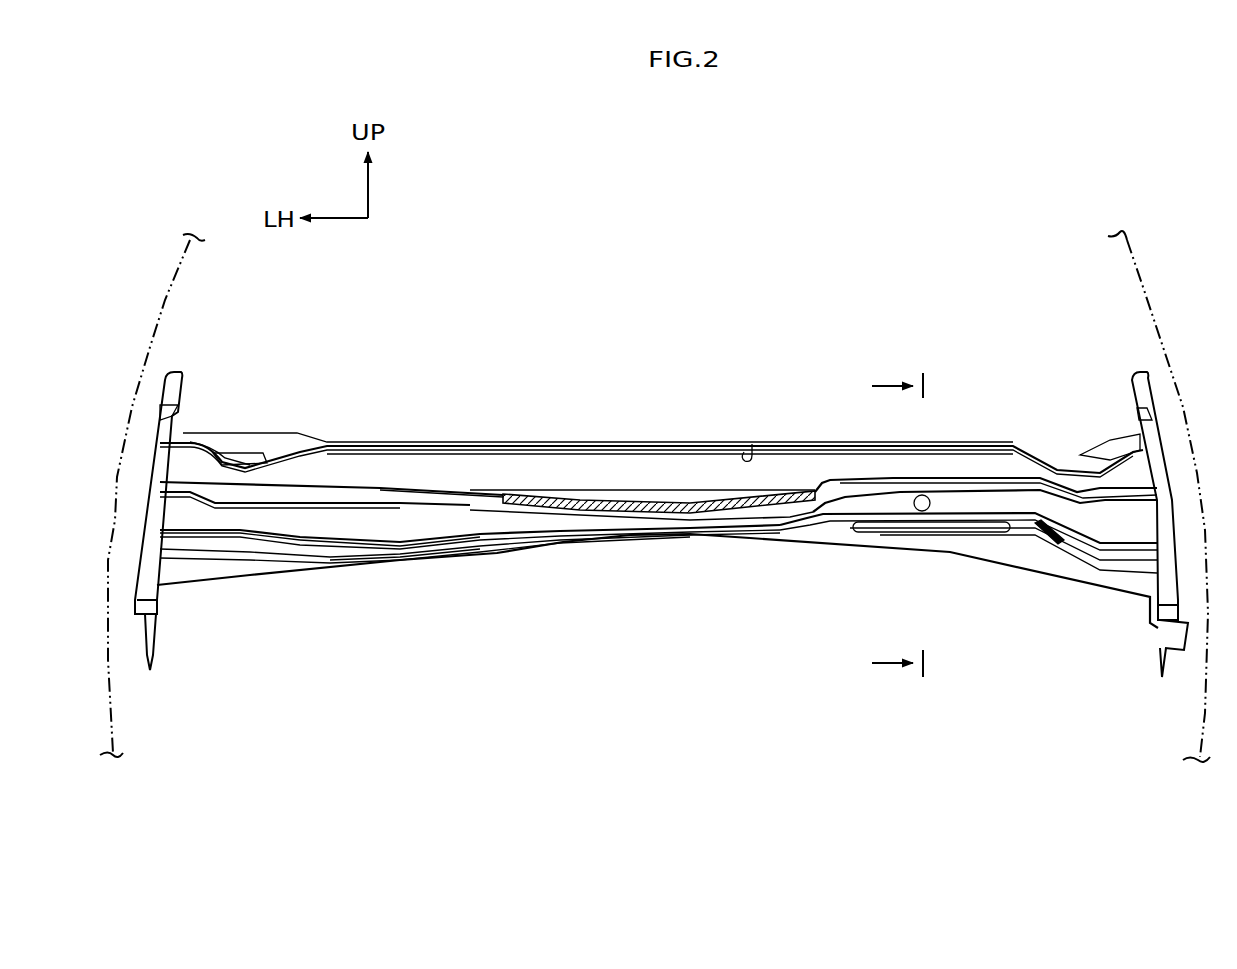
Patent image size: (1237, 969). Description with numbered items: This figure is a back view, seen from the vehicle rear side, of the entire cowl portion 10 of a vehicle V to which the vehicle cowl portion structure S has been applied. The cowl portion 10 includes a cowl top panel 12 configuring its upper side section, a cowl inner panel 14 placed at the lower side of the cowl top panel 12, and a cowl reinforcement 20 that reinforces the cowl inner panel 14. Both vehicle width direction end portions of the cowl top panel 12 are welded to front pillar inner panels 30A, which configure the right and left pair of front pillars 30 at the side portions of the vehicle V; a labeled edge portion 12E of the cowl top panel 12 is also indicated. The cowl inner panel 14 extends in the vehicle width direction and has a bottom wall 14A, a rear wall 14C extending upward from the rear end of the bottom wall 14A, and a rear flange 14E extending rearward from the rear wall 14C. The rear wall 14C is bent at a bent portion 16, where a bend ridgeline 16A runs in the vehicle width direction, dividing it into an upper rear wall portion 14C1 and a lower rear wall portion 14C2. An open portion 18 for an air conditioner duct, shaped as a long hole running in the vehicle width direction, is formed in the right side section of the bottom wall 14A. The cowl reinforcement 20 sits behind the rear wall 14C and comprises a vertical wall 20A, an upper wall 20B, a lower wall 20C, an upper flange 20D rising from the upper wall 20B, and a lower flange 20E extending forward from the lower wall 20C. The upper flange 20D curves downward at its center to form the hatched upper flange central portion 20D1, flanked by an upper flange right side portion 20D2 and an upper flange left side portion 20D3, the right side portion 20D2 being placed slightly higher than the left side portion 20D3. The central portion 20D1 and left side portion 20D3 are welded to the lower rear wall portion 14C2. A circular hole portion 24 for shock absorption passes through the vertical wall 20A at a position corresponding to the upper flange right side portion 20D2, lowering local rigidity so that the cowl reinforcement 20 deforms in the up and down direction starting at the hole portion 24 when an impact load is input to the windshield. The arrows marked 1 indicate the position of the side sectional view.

The cowl portion 10 is at (883, 258).
The cowl top panel 12 is at (651, 390).
The upper edge of cowl top panel 12E is at (412, 441).
The cowl inner panel 14 is at (659, 465).
The bottom wall 14A is at (954, 561).
The rear wall 14C is at (830, 466).
The upper rear wall portion 14C1 is at (795, 465).
The lower rear wall portion 14C2 is at (640, 494).
The rear flange 14E is at (752, 444).
The bent portion 16 is at (642, 409).
The bend ridgeline 16A is at (670, 489).
The open portion 18 is at (980, 530).
The cowl reinforcement 20 is at (657, 508).
The vertical wall 20A is at (427, 528).
The upper wall 20B is at (248, 502).
The lower wall 20C is at (287, 535).
The upper flange 20D is at (768, 500).
The upper flange central portion 20D1 is at (591, 509).
The upper flange right side portion 20D2 is at (943, 483).
The upper flange left side portion 20D3 is at (458, 497).
The lower flange 20E is at (395, 543).
The hole portion 24 is at (922, 511).
The front pillars 30 is at (663, 496).
The front pillar inner panels 30A is at (1203, 363).
The section line 1 is at (890, 525).
The vehicle cowl portion structure S is at (941, 318).
The vehicle V is at (1058, 200).